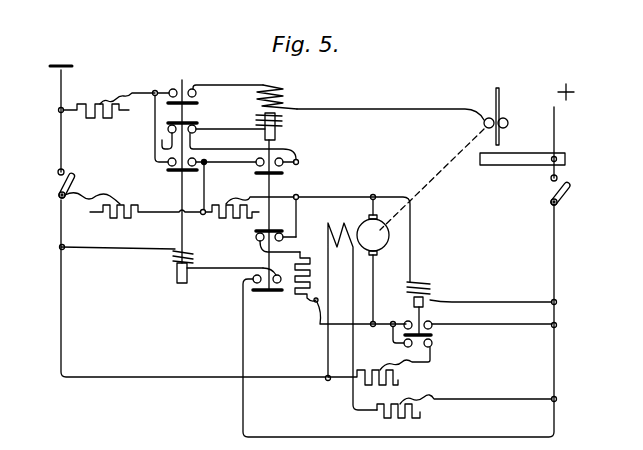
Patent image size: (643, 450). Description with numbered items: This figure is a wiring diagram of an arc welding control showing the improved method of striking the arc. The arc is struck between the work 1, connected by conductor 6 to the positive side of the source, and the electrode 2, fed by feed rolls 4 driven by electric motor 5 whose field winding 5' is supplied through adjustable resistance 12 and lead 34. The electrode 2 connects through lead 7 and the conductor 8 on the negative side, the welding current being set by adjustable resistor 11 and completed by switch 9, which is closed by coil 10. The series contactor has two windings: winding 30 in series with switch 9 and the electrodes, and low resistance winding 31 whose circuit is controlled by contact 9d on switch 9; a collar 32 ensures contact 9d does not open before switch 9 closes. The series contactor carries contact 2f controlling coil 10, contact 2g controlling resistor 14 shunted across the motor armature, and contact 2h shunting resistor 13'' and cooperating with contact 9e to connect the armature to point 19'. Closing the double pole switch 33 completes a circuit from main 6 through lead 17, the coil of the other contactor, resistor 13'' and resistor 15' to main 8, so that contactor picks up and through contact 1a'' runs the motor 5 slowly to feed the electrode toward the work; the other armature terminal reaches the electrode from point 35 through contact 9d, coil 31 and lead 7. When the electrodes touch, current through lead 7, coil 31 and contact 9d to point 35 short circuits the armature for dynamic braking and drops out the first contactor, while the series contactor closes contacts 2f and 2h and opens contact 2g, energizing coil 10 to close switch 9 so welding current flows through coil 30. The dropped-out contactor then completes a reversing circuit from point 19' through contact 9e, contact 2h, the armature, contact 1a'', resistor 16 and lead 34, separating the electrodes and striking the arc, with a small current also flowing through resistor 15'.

The conductor 8 is at (59, 84).
The adjustable resistor 11 is at (92, 103).
The point 19' is at (155, 83).
The switch 9 is at (215, 161).
The contact 9d is at (196, 124).
The contact 9e is at (168, 171).
The collar 32 is at (164, 142).
The winding 30 is at (262, 85).
The low resistance winding 31 is at (264, 120).
The conductor 7 is at (393, 108).
The electrode 2 is at (500, 142).
The feed rolls 4 is at (507, 120).
The work 1 is at (498, 160).
The conductor 6 is at (558, 140).
The double pole switch 33 is at (71, 183).
The lead 17 is at (556, 255).
The resistor 15' is at (135, 217).
The resistor 13'' is at (249, 220).
The contact 2h is at (257, 175).
The point 35 is at (299, 195).
The contact 2g is at (278, 232).
The contact 2f is at (274, 293).
The resistor 14 is at (309, 262).
The field winding 5' is at (346, 309).
The electric motor 5 is at (372, 261).
The coil 10 is at (174, 264).
The lead 34 is at (127, 378).
The contact 1a'' is at (472, 336).
The resistor 16 is at (398, 383).
The resistance 12 is at (422, 419).